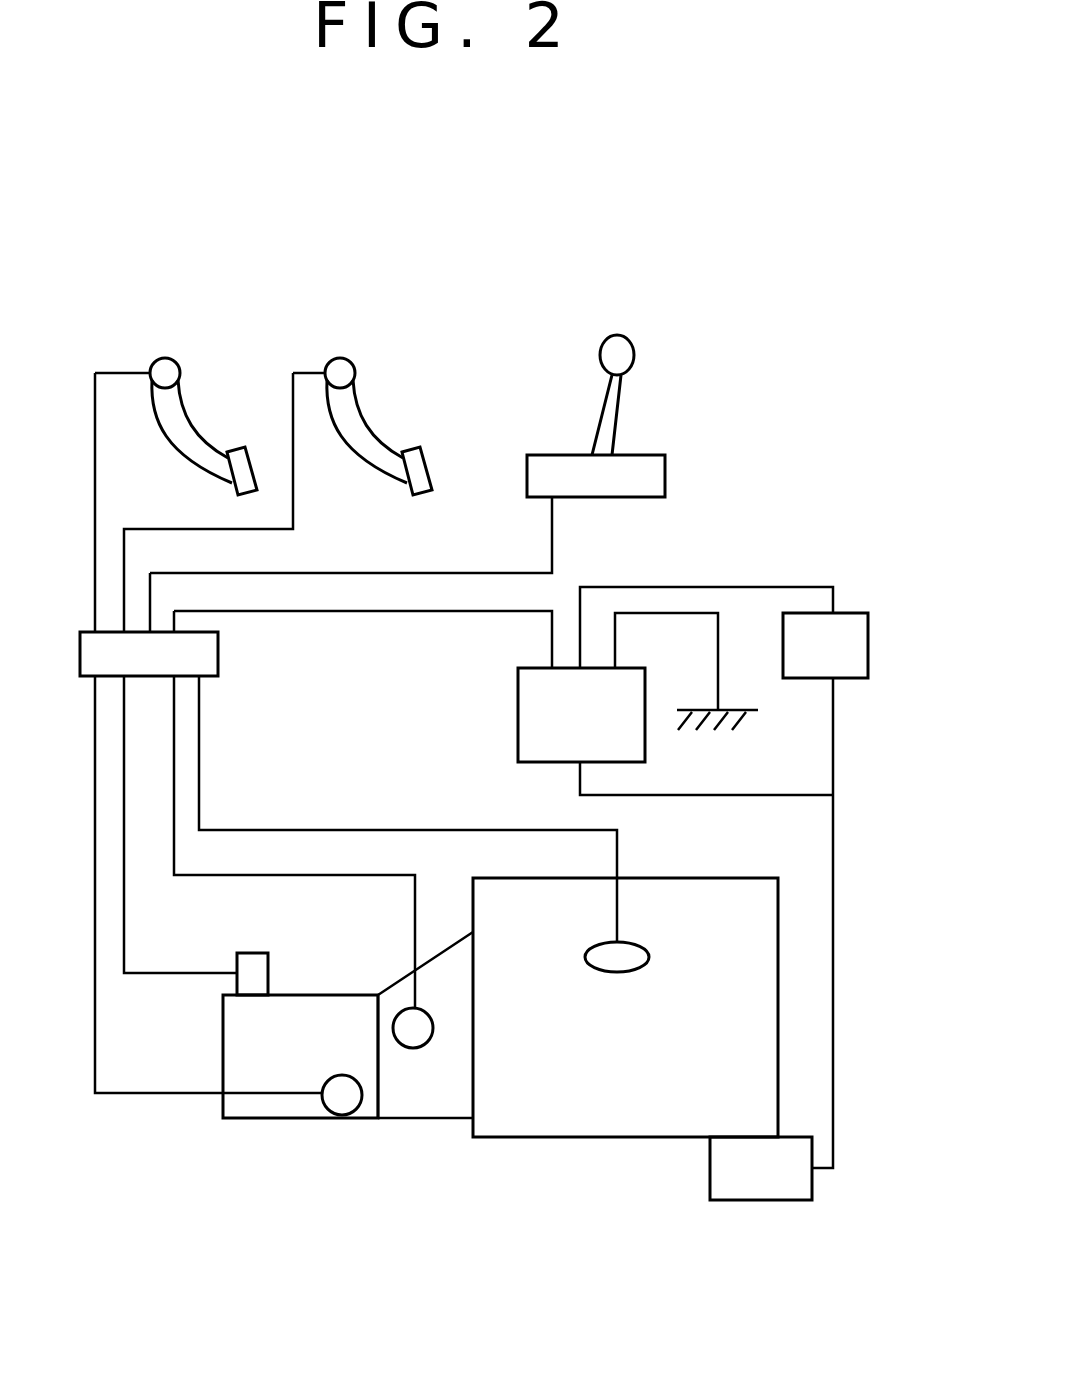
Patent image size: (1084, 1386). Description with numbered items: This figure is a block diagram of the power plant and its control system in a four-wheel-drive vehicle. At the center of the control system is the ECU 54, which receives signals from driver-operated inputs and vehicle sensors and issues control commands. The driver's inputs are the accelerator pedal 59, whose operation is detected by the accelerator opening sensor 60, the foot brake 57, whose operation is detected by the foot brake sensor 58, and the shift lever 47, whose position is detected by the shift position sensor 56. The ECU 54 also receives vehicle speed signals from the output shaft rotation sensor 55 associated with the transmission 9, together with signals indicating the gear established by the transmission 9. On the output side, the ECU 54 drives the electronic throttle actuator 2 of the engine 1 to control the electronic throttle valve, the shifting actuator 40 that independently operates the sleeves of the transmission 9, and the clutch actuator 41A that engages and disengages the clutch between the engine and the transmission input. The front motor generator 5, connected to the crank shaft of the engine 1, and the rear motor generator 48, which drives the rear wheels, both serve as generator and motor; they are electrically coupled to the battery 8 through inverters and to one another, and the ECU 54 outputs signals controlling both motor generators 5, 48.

The engine 1 is at (588, 1137).
The electronic throttle actuator 2 is at (613, 967).
The motor generator 5 is at (760, 1187).
The battery 8 is at (530, 743).
The transmission 9 is at (260, 1120).
The actuator 40 is at (245, 980).
The clutch actuator 41A is at (412, 1040).
The shift lever 47 is at (600, 400).
The motor generator 48 is at (862, 638).
The ECU 54 is at (210, 655).
The output shaft rotation sensor 55 is at (340, 1103).
The shift position sensor 56 is at (632, 490).
The foot brake 57 is at (370, 437).
The foot brake sensor 58 is at (340, 358).
The accelerator pedal 59 is at (195, 437).
The accelerator opening sensor 60 is at (165, 358).